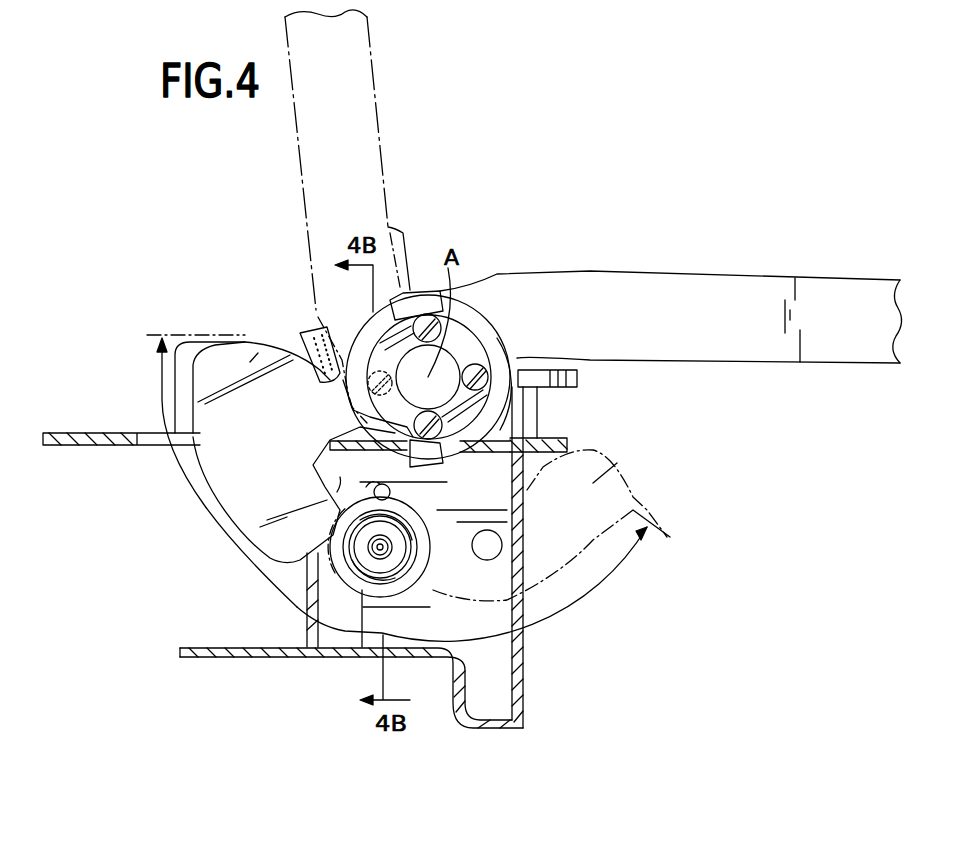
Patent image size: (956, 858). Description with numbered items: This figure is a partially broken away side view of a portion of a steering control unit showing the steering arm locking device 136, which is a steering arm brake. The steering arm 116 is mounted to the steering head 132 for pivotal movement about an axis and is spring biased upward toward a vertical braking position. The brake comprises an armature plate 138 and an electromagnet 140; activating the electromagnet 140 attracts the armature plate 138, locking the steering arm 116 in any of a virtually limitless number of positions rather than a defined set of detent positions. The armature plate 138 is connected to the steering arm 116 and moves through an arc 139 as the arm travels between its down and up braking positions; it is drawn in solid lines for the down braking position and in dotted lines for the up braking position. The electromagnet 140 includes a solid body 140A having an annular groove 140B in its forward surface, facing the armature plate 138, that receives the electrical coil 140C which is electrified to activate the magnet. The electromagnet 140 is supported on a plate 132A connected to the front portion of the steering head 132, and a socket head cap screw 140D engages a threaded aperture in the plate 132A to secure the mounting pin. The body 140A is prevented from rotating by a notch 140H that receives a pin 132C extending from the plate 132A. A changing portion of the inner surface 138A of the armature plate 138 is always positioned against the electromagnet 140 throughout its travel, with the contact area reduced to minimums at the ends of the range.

The steering arm 116 is at (300, 148).
The steering head 132 is at (110, 433).
The plate 132A is at (500, 637).
The pin 132C is at (387, 484).
The locking device 136 is at (340, 597).
The armature plate 138 is at (227, 457).
The inner surface 138A is at (267, 340).
The arc 139 is at (583, 593).
The electromagnet 140 is at (388, 597).
The solid body 140A is at (412, 555).
The annular groove 140B is at (427, 557).
The electrical coil 140C is at (417, 513).
The socket head cap screw 140D is at (380, 547).
The notch 140H is at (340, 484).